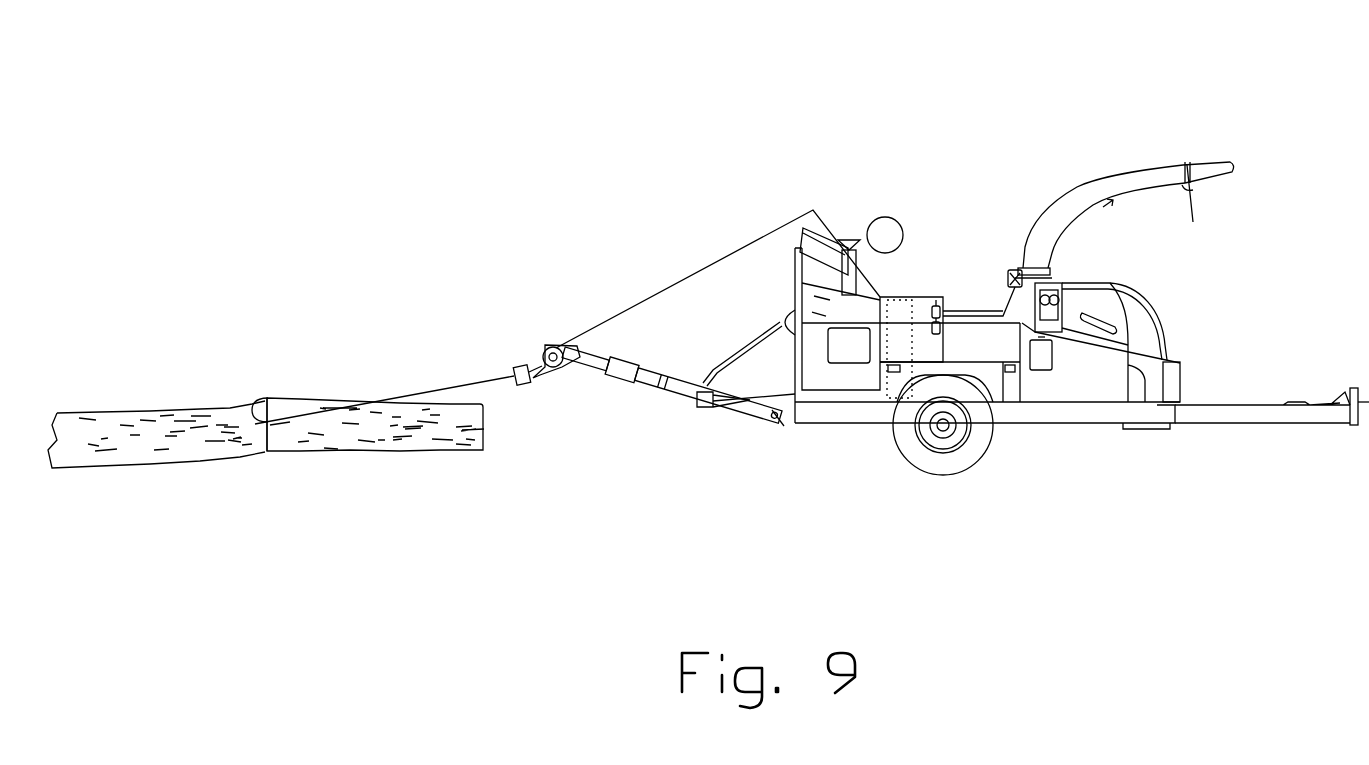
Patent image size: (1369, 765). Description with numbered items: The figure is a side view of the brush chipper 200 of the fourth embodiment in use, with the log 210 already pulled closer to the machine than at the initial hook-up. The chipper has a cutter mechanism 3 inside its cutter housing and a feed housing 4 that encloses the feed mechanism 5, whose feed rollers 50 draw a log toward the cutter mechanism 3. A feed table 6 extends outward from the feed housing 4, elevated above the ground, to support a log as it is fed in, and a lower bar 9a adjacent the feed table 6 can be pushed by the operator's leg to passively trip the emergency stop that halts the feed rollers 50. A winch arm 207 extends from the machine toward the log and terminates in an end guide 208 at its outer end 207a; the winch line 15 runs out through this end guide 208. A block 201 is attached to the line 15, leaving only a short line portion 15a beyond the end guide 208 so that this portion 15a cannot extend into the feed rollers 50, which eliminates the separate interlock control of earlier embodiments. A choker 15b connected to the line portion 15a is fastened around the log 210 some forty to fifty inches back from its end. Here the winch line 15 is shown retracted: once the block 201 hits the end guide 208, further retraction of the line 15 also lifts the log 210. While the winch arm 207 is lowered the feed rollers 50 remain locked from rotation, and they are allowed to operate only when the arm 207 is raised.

The wood chipper 200 is at (1077, 255).
The cutter mechanism 3 is at (980, 330).
The feed housing 4 is at (934, 300).
The feed mechanism 5 is at (887, 294).
The feed rollers 50 is at (905, 303).
The winch line 15 is at (750, 242).
The line portion 15a is at (363, 410).
The choker 15b is at (287, 427).
The feed table 6 is at (753, 412).
The lower bar 9a is at (698, 403).
The winch arm 207 is at (662, 367).
The boom end 207a is at (777, 421).
The end guide 208 is at (550, 338).
The block 201 is at (527, 385).
The log 210 is at (173, 413).